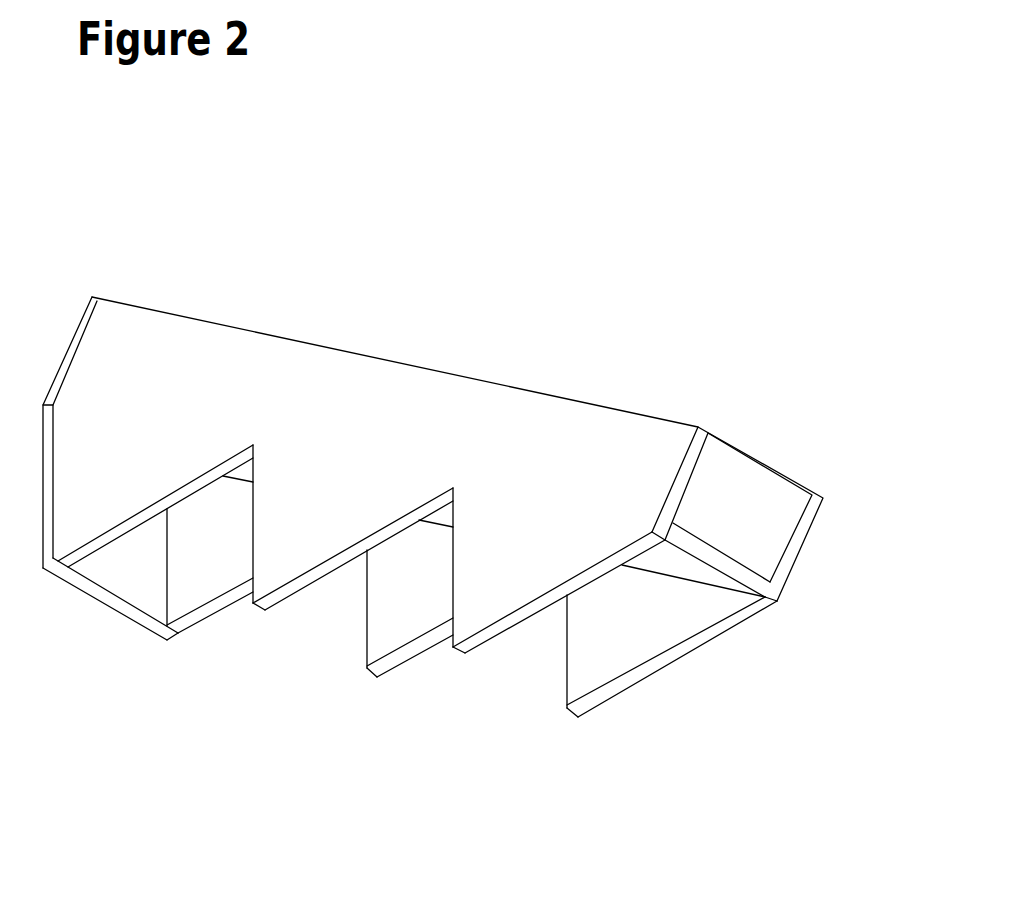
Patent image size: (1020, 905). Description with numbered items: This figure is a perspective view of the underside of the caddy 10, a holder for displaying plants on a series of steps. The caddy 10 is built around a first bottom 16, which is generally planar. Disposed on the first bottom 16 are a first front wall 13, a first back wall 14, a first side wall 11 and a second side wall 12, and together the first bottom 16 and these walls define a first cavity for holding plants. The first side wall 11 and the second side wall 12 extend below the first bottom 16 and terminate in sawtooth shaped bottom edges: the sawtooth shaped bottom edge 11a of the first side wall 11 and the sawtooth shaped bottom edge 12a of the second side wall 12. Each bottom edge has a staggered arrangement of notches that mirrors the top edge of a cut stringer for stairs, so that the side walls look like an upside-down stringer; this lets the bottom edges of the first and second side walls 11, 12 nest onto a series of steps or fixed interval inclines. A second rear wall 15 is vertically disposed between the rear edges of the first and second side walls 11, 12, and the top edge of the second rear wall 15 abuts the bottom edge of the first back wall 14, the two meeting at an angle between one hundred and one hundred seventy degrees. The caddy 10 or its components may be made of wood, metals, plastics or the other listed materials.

The caddy 10 is at (580, 237).
The first side wall 11 is at (286, 362).
The sawtooth shaped bottom edge of the first side wall 11a is at (295, 585).
The second side wall 12 is at (590, 665).
The sawtooth shaped bottom edge of the second side wall 12a is at (610, 693).
The first front wall 13 is at (755, 485).
The first back wall 14 is at (65, 358).
The second rear wall 15 is at (112, 607).
The first bottom 16 is at (668, 557).